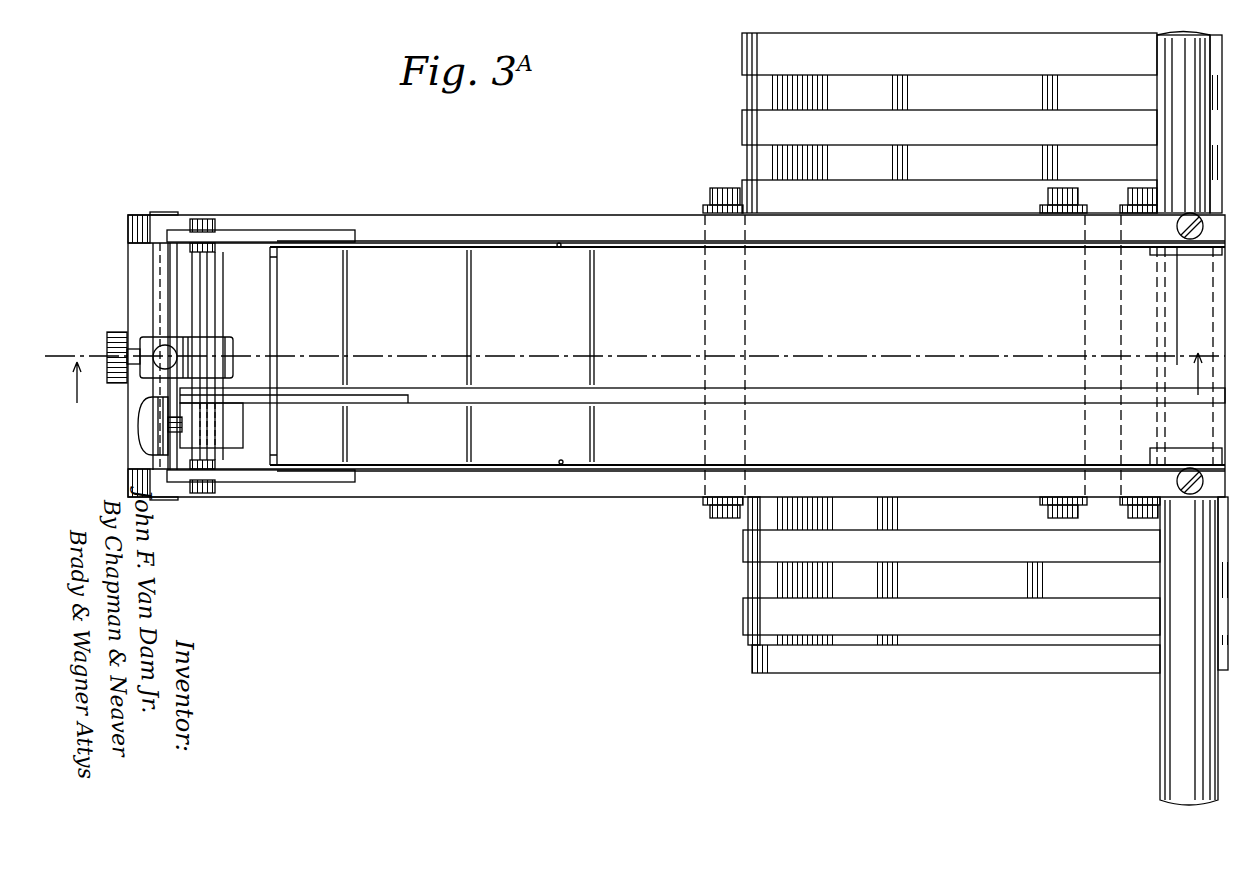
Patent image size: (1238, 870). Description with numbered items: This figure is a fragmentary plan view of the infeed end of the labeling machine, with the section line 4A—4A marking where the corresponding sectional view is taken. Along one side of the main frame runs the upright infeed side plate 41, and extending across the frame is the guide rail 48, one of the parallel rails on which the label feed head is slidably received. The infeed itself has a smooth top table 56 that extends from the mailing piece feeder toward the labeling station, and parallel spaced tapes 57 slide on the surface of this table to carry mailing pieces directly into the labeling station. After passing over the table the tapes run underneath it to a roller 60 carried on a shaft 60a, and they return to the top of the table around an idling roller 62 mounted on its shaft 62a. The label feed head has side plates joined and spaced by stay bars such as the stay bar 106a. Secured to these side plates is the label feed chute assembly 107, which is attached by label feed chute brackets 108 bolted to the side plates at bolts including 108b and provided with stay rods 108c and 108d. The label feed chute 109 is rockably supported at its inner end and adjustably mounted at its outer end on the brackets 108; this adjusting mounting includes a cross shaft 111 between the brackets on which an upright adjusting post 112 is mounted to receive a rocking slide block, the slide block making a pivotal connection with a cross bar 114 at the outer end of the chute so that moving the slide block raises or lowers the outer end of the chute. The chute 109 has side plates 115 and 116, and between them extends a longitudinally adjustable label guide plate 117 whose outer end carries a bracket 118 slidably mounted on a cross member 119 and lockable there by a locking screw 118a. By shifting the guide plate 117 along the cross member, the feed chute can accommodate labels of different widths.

The infeed side plate 41 is at (1090, 658).
The guide rail 48 is at (1170, 86).
The table 56 is at (985, 648).
The tapes 57 is at (917, 187).
The roller 60 is at (827, 580).
The shaft 60a is at (826, 646).
The idling roller 62 is at (748, 581).
The shaft 62a is at (777, 646).
The stay bar 106a is at (1140, 512).
The label feed chute assembly 107 is at (488, 208).
The label feed chute bracket 108 is at (411, 222).
The bolt 108b is at (1184, 214).
The stay rod 108c is at (722, 514).
The stay rod 108d is at (1048, 509).
The label feed chute 109 is at (655, 262).
The cross shaft 111 is at (153, 268).
The adjusting post 112 is at (163, 346).
The cross bar 114 is at (202, 219).
The side plate 115 is at (562, 464).
The side plate 116 is at (560, 243).
The label guide plate 117 is at (477, 405).
The bracket 118 is at (243, 400).
The locking screw 118a is at (146, 424).
The cross member 119 is at (222, 306).
The section line 4A— 4A is at (630, 378).